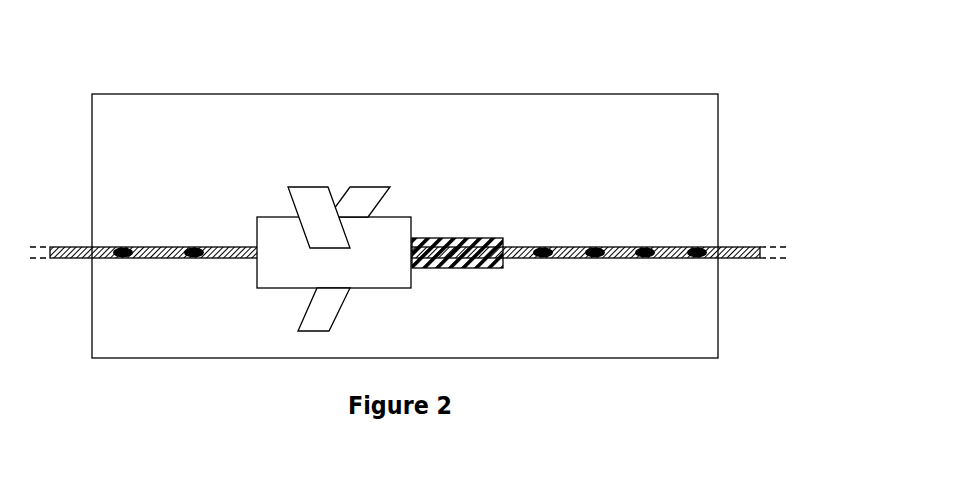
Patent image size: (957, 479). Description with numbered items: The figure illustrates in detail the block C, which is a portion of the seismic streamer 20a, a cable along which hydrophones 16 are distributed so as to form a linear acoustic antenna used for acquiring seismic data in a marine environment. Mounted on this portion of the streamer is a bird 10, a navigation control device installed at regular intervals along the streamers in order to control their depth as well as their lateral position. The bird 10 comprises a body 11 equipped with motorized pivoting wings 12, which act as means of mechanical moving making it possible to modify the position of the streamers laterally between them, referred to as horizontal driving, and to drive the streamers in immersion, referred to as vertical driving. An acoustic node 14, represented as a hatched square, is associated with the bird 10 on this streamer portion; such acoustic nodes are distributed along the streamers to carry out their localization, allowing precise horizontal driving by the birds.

The block C is at (577, 94).
The bird 10 is at (325, 217).
The body 11 is at (268, 282).
The motorized pivoting wings 12 is at (305, 195).
The acoustic node 14 is at (462, 263).
The hydrophones 16 is at (595, 247).
The seismic streamer 20a is at (730, 247).